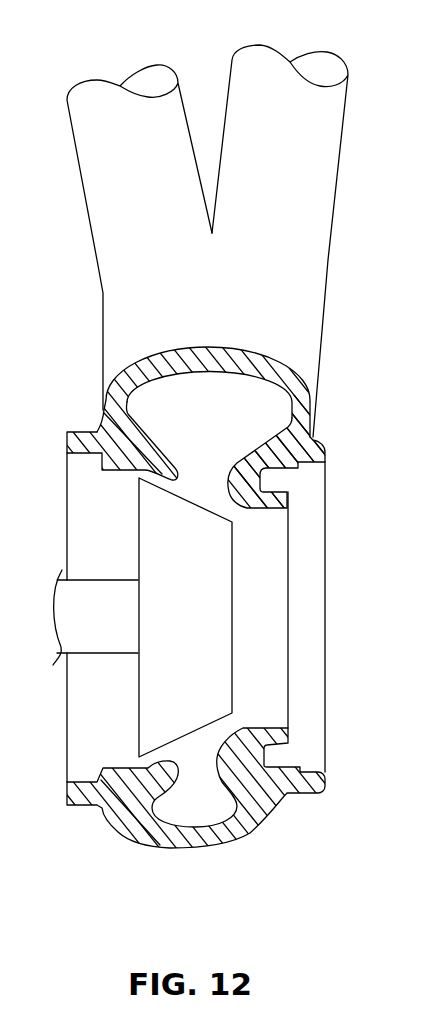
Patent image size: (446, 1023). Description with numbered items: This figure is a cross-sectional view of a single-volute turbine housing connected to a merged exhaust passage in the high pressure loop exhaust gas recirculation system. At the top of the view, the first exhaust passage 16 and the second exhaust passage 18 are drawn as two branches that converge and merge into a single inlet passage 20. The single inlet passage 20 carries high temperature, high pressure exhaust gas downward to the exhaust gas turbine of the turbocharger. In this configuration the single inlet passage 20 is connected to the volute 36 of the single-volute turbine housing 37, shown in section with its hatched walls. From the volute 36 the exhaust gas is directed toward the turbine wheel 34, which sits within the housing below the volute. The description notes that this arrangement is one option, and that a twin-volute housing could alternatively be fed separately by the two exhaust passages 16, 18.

The first exhaust passage 16 is at (322, 142).
The second exhaust passage 18 is at (93, 167).
The single inlet passage 20 is at (125, 336).
The turbine wheel 34 is at (171, 622).
The volute 36 is at (196, 418).
The single-volute turbine housing 37 is at (298, 440).